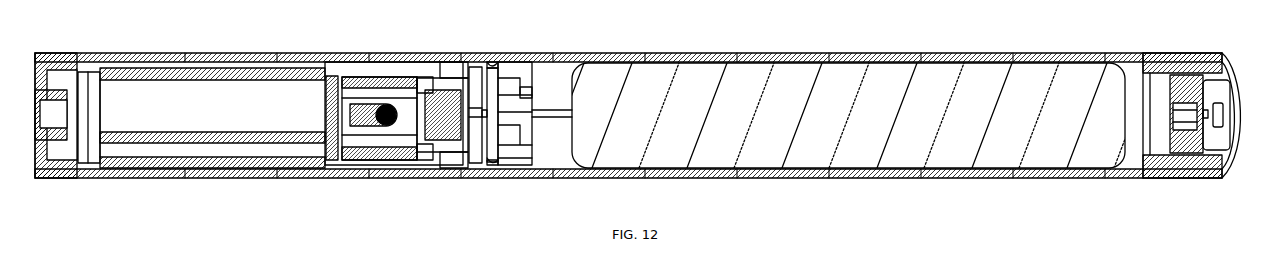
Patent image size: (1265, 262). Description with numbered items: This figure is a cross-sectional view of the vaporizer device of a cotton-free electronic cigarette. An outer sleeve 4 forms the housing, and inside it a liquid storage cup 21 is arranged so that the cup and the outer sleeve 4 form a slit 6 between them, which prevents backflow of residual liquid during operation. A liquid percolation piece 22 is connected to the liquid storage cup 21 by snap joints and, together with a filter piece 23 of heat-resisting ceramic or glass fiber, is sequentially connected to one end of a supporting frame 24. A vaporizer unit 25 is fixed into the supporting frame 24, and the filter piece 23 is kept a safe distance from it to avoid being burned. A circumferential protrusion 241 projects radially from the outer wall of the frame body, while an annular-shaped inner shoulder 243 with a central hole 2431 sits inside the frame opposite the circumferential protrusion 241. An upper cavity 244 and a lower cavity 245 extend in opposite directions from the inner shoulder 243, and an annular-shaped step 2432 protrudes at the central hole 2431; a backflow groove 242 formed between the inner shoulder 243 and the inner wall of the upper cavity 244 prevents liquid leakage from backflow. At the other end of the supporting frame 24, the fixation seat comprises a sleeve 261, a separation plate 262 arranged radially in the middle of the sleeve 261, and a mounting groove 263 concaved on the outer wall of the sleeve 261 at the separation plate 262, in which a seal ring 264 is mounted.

The outer sleeve 4 is at (163, 56).
The slit 6 is at (123, 63).
The liquid storage cup 21 is at (210, 72).
The liquid percolation piece 22 is at (315, 62).
The filter piece 23 is at (329, 72).
The supporting frame 24 is at (392, 77).
The vaporizer unit 25 is at (381, 104).
The circumferential protrusion 241 is at (463, 67).
The backflow groove 242 is at (425, 78).
The annular-shaped inner shoulder 243 is at (437, 150).
The central hole 2431 is at (478, 152).
The annular-shaped step 2432 is at (410, 150).
The upper cavity 244 is at (348, 172).
The lower cavity 245 is at (460, 145).
The sleeve 261 is at (533, 57).
The separation plate 262 is at (483, 67).
The mounting groove 263 is at (513, 163).
The seal ring 264 is at (502, 65).